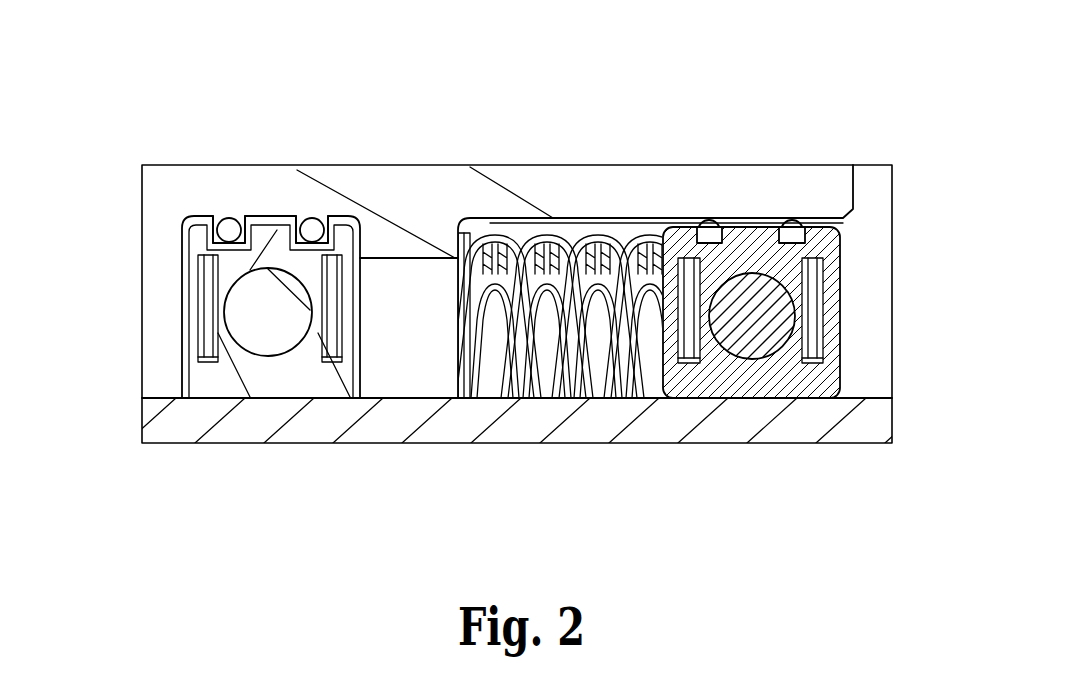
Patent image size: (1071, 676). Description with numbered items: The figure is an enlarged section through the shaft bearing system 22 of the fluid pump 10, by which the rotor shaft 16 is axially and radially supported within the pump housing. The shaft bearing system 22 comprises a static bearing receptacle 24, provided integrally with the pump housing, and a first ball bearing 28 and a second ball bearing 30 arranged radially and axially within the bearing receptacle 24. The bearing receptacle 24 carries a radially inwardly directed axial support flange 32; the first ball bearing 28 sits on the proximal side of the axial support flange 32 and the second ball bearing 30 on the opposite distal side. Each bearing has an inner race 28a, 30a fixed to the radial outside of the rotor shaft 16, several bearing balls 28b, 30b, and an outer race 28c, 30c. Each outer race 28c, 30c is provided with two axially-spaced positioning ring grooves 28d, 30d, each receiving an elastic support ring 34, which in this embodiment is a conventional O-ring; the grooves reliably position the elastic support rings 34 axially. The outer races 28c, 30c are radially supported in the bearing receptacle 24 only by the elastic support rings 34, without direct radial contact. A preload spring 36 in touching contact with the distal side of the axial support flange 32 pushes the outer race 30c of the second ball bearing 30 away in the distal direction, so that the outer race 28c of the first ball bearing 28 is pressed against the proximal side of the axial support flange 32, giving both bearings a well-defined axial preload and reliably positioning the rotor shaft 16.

The fluid pump 10 is at (895, 126).
The rotor shaft 16 is at (838, 426).
The shaft bearing system 22 is at (172, 121).
The static bearing receptacle 24 is at (880, 185).
The first ball bearing 28 is at (206, 265).
The inner race 28a is at (207, 376).
The bearing balls 28b is at (262, 302).
The outer race 28c is at (205, 240).
The positioning ring grooves 28d is at (306, 216).
The second ball bearing 30 is at (661, 253).
The inner race 30a is at (835, 384).
The bearing balls 30b is at (765, 321).
The outer race 30c is at (846, 243).
The positioning ring grooves 30d is at (790, 216).
The axial support flange 32 is at (400, 280).
The elastic support rings 34 is at (230, 216).
The preload spring 36 is at (571, 231).